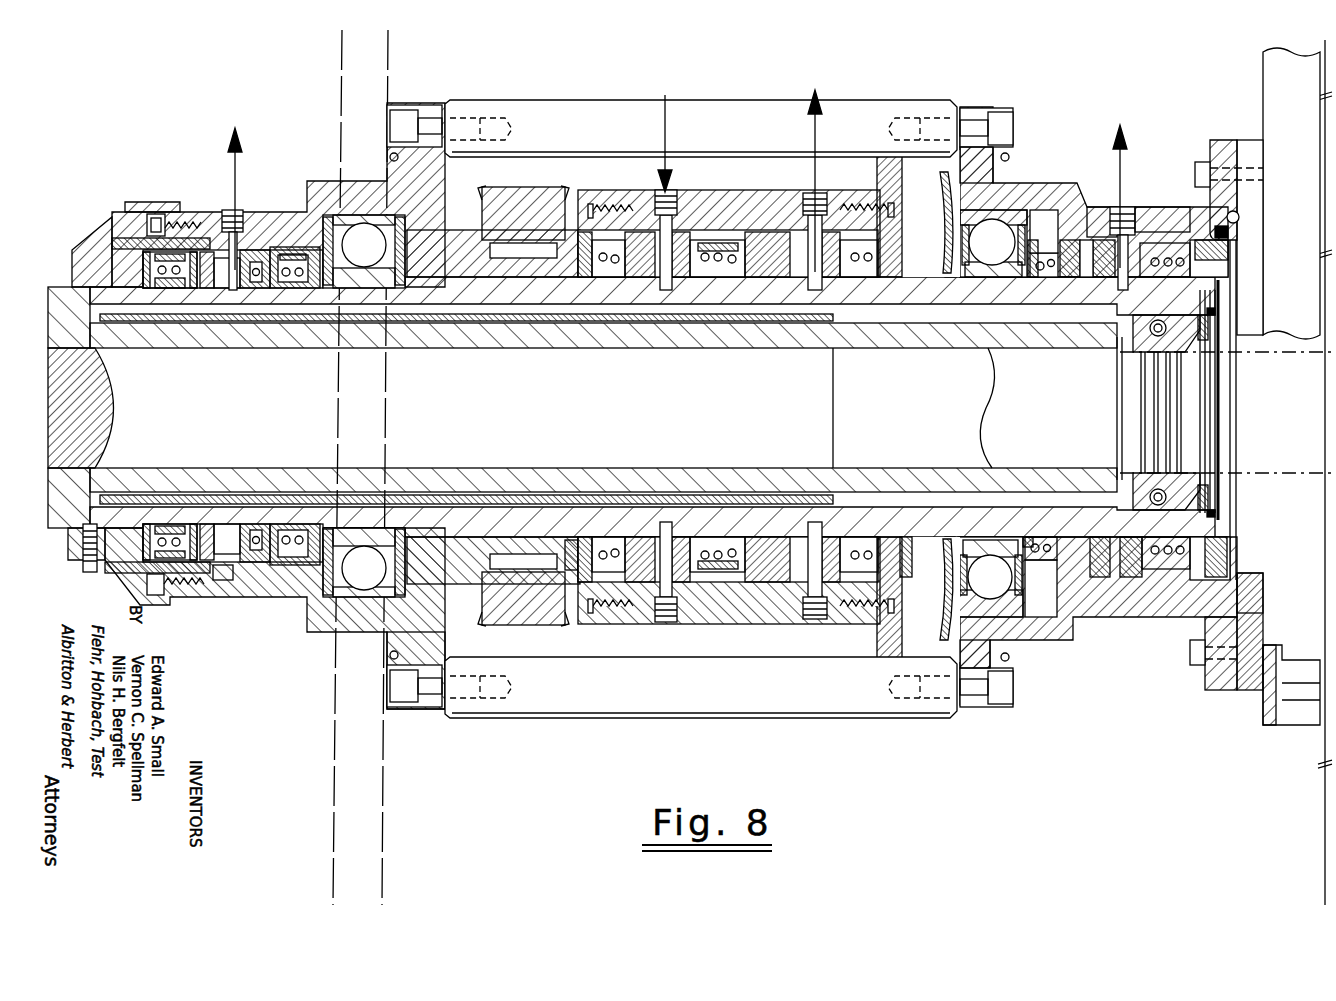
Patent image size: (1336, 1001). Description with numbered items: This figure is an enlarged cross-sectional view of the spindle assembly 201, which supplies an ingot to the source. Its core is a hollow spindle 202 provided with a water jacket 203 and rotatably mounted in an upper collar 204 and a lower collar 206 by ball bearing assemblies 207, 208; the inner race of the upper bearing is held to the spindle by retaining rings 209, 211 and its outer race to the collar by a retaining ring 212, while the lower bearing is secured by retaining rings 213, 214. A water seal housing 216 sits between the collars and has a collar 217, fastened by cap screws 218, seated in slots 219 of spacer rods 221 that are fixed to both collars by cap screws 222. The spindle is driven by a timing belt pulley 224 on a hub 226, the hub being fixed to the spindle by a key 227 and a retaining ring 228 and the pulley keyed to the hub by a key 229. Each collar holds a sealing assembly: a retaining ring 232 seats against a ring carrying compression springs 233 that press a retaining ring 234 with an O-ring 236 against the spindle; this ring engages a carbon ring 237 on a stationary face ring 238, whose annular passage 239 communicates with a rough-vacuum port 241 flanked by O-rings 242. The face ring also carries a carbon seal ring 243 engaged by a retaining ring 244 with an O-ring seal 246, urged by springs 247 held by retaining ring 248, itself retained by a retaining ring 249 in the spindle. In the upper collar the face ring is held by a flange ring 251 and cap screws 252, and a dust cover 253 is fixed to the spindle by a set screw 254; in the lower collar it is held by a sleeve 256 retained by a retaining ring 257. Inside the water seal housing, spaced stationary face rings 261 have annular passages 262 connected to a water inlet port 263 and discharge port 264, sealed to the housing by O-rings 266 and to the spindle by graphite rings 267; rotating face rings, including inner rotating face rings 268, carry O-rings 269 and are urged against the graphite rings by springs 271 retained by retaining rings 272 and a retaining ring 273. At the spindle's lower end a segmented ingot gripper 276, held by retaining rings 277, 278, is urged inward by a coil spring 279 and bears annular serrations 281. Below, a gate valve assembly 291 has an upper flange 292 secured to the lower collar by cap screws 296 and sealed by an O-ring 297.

The spindle assembly 201 is at (282, 300).
The hollow spindle 202 is at (700, 348).
The water jacket 203 is at (745, 478).
The upper collar 204 is at (302, 202).
The lower collar 206 is at (1140, 230).
The ball bearing assembly 207 is at (365, 563).
The ball bearing assembly 208 is at (992, 570).
The retaining ring 209 is at (335, 545).
The retaining ring 211 is at (400, 545).
The retaining ring 212 is at (380, 640).
The retaining ring 213 is at (950, 545).
The retaining ring 214 is at (1035, 545).
The water seal housing 216 is at (720, 207).
The collar 217 is at (882, 200).
The cap screws 218 is at (903, 225).
The slots 219 is at (872, 158).
The spacer rods 221 is at (720, 137).
The cap screws 222 is at (398, 124).
The timing belt pulley 224 is at (524, 190).
The hub 226 is at (480, 592).
The key 227 is at (508, 554).
The retaining ring 228 is at (572, 540).
The key 229 is at (520, 258).
The retaining ring 232 is at (322, 290).
The compression springs 233 is at (1045, 233).
The retaining ring 234 is at (258, 562).
The O-ring 236 is at (292, 545).
The carbon or graphite ring 237 is at (256, 290).
The stationary face ring 238 is at (232, 290).
The annular passage 239 is at (1105, 232).
The port 241 is at (233, 210).
The O-rings 242 is at (210, 560).
The graphite or carbon seal ring 243 is at (218, 290).
The retaining ring 244 is at (186, 290).
The O-ring seal 246 is at (180, 526).
The springs 247 is at (170, 290).
The retaining ring 248 is at (160, 538).
The retaining ring 249 is at (145, 528).
The flange ring 251 is at (128, 240).
The cap screws 252 is at (157, 215).
The dust cover 253 is at (97, 245).
The set screw 254 is at (90, 572).
The sleeve 256 is at (1208, 608).
The retaining ring 257 is at (1220, 228).
The stationary face rings 261 is at (670, 278).
The annular passages 262 is at (664, 620).
The port 263 is at (676, 192).
The port 264 is at (808, 205).
The O-rings 266 is at (620, 590).
The graphite rings 267 is at (640, 278).
The inner rotating face rings 268 is at (737, 232).
The O-ring 269 is at (600, 278).
The spring 271 is at (606, 537).
The retaining rings 272 is at (582, 278).
The retaining ring 273 is at (906, 537).
The segmented ingot gripper 276 is at (1192, 482).
The retaining ring 277 is at (1208, 484).
The retaining ring 278 is at (1216, 510).
The coil spring 279 is at (1165, 255).
The annular serrations 281 is at (1180, 430).
The gate valve assembly 291 is at (1272, 79).
The upper flange 292 is at (1250, 142).
The cap screws 296 is at (1202, 162).
The O-ring 297 is at (1265, 606).